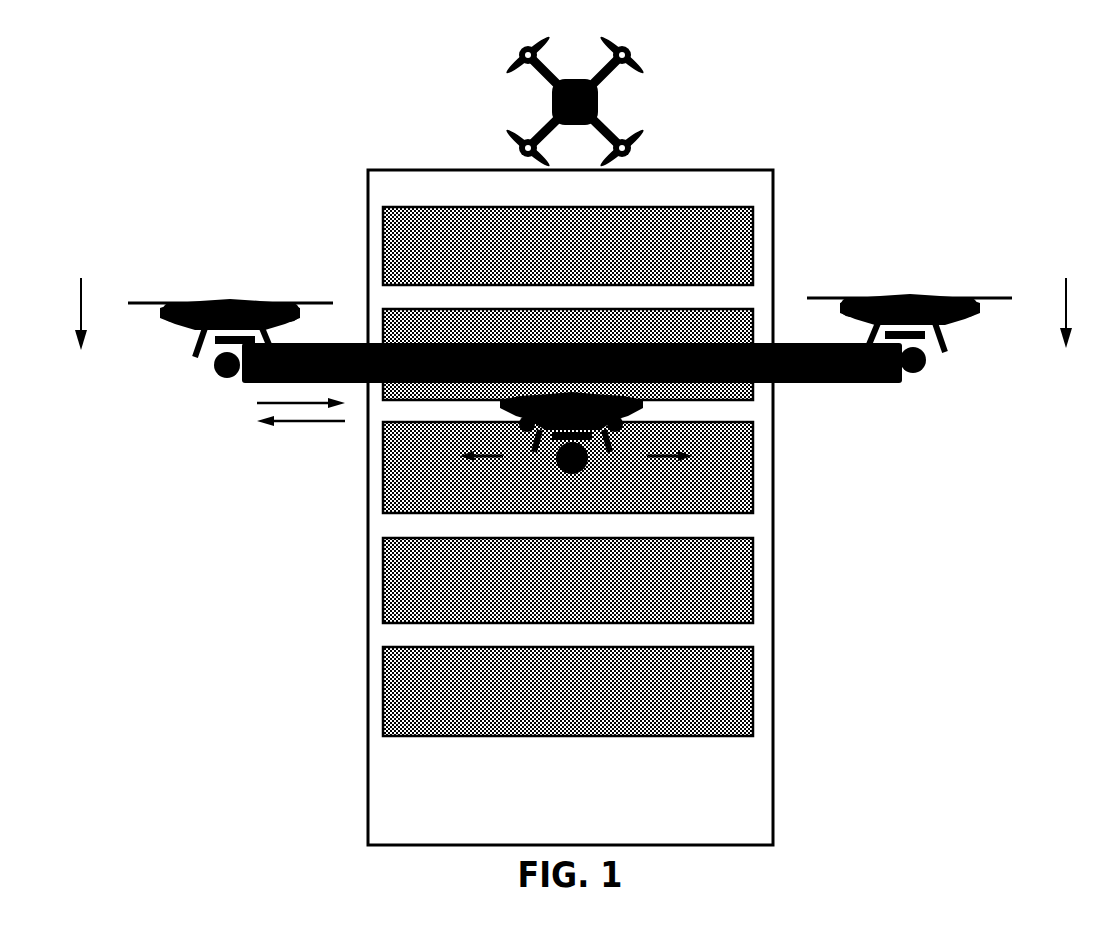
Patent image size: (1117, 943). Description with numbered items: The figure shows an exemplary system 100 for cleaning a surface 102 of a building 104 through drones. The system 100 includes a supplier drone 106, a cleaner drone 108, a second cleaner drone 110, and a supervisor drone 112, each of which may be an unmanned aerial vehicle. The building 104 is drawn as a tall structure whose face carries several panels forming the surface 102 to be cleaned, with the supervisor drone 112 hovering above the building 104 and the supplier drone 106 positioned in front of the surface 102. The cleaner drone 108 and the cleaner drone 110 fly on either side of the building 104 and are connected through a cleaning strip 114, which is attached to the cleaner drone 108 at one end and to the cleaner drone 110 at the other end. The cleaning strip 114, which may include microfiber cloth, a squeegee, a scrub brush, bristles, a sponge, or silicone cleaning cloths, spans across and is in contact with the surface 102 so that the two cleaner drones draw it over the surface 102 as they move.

The system 100 is at (985, 75).
The surface 102 is at (636, 338).
The building 104 is at (774, 222).
The supplier drone 106 is at (590, 458).
The cleaner drone 108 is at (918, 297).
The cleaner drone 110 is at (238, 303).
The supervisor drone 112 is at (553, 100).
The cleaning strip 114 is at (842, 383).